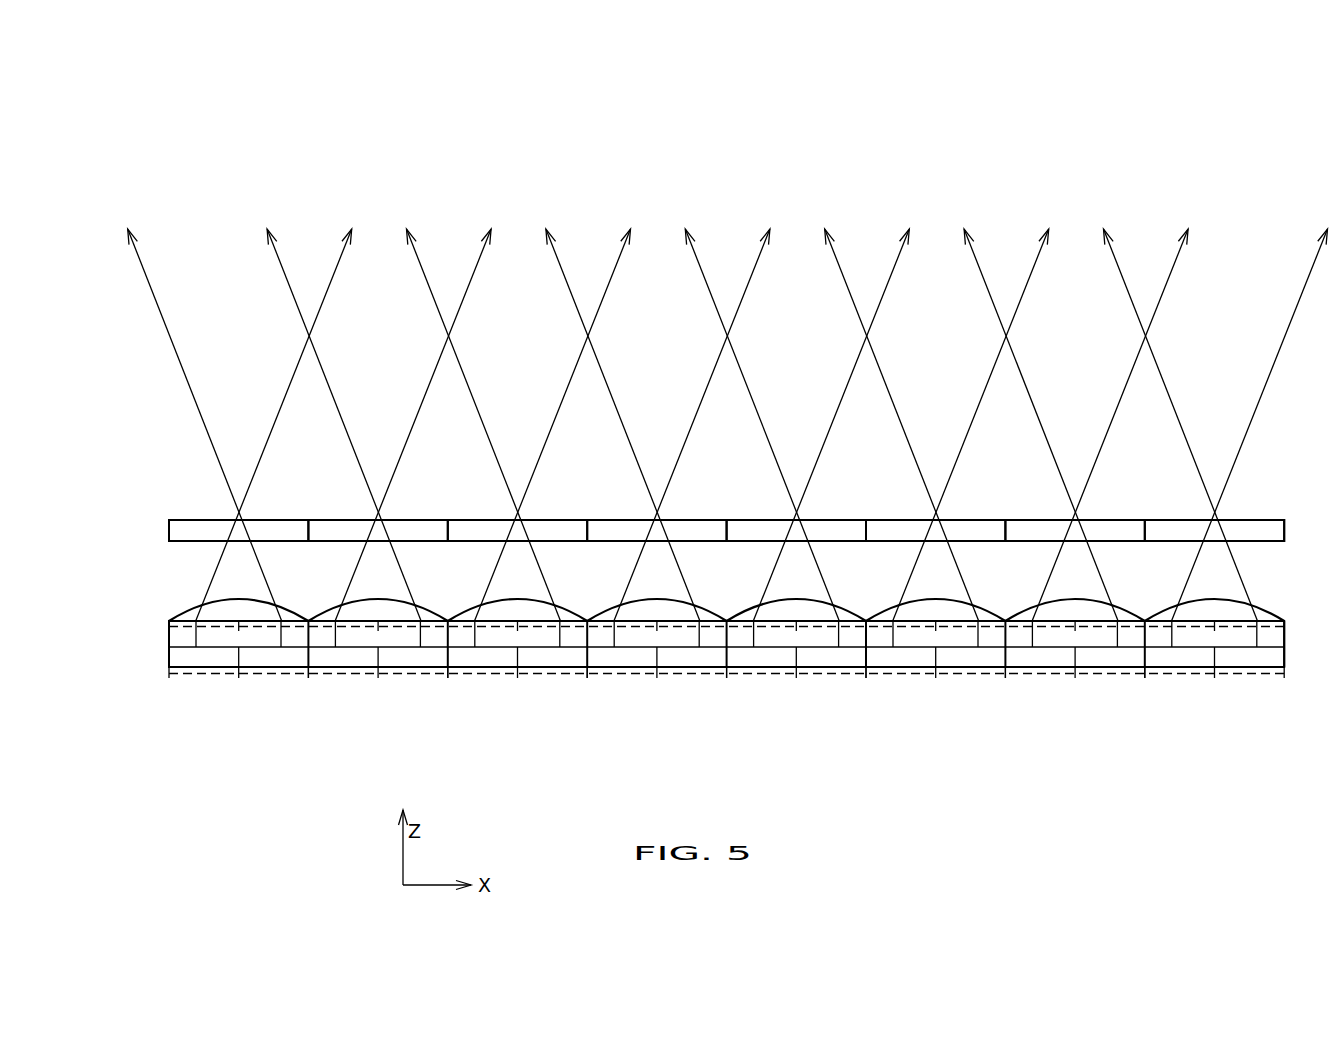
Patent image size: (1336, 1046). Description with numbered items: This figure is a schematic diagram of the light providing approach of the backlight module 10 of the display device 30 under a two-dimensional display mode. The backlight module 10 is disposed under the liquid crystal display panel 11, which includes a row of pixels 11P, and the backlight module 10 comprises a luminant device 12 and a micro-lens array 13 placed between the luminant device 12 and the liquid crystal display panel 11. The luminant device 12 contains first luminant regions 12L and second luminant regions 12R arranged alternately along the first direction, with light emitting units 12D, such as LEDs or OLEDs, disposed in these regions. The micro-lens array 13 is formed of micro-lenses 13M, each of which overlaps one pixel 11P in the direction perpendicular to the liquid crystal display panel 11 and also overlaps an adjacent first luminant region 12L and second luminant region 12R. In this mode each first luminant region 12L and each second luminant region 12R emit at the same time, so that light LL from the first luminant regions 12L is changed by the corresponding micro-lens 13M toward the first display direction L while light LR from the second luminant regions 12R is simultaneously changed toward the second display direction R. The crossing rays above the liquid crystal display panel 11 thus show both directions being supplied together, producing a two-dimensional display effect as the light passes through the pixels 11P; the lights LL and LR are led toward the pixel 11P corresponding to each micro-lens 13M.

The display device 30 is at (1212, 188).
The backlight module 10 is at (103, 600).
The liquid crystal display panel 11 is at (157, 523).
The pixel 11P is at (726, 506).
The luminant device 12 is at (148, 633).
The light emitting unit 12D is at (725, 668).
The first luminant region 12L is at (710, 682).
The second luminant region 12R is at (768, 682).
The micro-lens array 13 is at (148, 598).
The micro-lens 13M is at (726, 590).
The light LL is at (698, 704).
The light LR is at (753, 701).
The first display direction L is at (978, 145).
The second display direction R is at (458, 222).